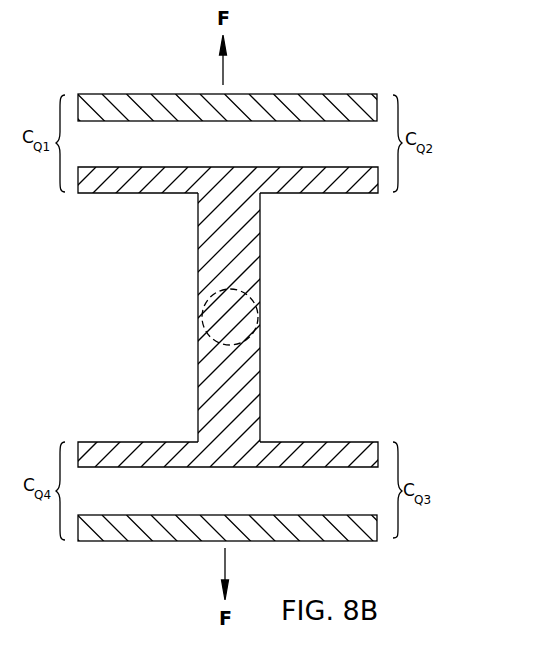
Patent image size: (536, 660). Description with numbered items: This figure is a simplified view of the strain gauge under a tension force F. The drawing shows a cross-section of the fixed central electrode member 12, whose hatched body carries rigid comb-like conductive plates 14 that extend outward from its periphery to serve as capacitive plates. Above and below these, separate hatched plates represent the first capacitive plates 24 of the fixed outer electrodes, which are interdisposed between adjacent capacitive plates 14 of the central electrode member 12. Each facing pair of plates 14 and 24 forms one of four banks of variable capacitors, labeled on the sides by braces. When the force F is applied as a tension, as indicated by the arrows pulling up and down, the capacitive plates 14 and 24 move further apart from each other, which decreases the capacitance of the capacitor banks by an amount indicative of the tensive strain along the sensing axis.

The central electrode member 12 is at (253, 248).
The conductive plates 14 is at (121, 194).
The first capacitive plates 24 is at (323, 93).